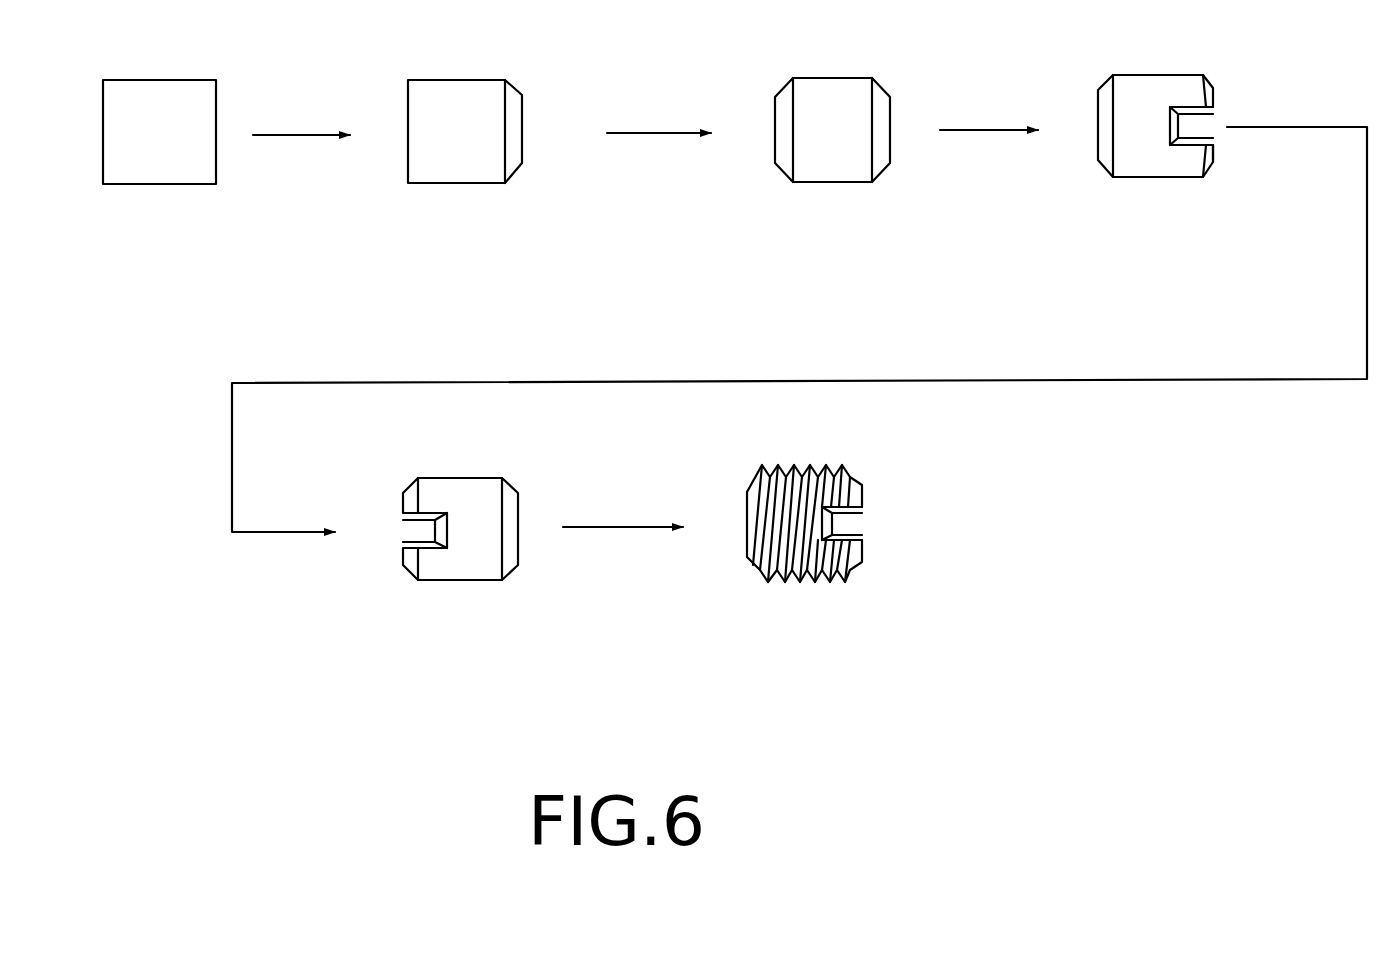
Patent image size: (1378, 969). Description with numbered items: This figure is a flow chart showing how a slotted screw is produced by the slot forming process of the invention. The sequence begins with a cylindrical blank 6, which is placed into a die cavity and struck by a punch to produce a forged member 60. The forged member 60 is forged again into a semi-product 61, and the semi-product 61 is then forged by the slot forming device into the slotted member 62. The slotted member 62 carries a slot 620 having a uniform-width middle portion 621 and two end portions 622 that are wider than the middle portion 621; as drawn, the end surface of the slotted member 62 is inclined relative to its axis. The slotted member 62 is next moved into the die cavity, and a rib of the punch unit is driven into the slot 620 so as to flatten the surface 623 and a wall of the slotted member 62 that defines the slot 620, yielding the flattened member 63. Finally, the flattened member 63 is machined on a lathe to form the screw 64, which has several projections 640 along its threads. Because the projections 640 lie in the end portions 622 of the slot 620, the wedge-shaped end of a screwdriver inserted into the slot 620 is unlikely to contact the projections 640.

The cylindrical blank 6 is at (170, 110).
The forged member 60 is at (460, 110).
The semi-product 61 is at (828, 117).
The slotted member 62 is at (1211, 132).
The slot 620 is at (1195, 125).
The middle portion 621 is at (1187, 146).
The end portions 622 is at (1187, 107).
The surface 623 is at (1213, 147).
The flattened member 63 is at (468, 503).
The screw 64 is at (871, 559).
The projections 640 is at (852, 520).